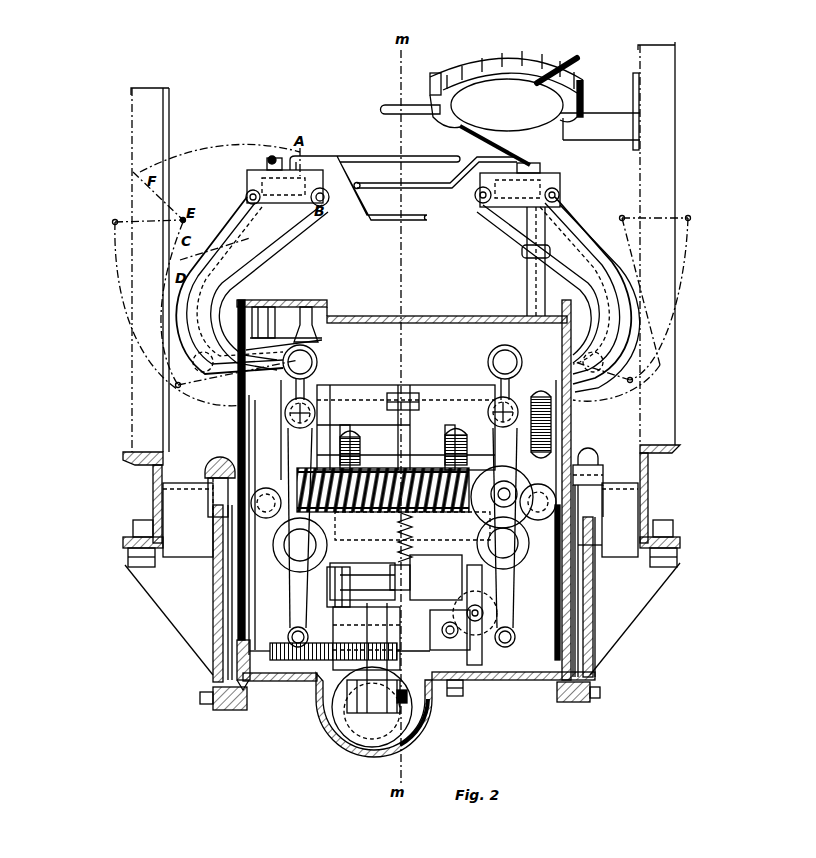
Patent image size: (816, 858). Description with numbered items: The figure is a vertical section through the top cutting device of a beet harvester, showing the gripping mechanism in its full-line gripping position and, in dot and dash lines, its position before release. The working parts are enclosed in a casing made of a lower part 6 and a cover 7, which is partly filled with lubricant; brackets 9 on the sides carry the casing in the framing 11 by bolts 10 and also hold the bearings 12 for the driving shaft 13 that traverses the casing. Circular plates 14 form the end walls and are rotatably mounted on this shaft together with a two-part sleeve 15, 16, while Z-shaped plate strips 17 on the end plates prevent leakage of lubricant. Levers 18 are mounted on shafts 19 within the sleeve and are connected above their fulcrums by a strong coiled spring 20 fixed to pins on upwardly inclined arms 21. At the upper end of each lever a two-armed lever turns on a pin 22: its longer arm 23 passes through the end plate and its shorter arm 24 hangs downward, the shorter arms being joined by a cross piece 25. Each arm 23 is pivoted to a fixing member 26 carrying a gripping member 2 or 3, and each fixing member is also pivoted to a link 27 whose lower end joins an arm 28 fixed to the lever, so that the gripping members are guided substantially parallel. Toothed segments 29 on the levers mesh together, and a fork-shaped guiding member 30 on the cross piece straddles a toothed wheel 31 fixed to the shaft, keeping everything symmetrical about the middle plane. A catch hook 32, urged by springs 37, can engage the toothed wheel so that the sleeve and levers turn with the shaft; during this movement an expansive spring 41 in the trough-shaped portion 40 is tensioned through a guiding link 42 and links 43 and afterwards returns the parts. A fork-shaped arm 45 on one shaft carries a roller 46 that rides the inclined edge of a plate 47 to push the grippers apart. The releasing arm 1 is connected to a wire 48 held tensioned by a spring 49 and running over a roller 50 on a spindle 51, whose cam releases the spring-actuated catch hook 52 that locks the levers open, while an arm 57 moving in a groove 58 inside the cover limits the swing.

The releasing arm 1 is at (415, 114).
The gripping member 2 is at (375, 156).
The gripping member 3 is at (415, 186).
The lower part of casing 6 is at (213, 640).
The cover 7 is at (430, 316).
The bracket 9 is at (160, 600).
The bolt 10 is at (140, 520).
The framing 11 is at (153, 480).
The bearing 12 is at (208, 466).
The driving shaft 13 is at (400, 520).
The circular plate 14 is at (238, 424).
The sleeve part 15 is at (256, 470).
The sleeve part 16 is at (571, 444).
The plate strip 17 is at (245, 441).
The lever 18 is at (290, 440).
The shaft 19 is at (285, 560).
The coiled spring 20 is at (338, 450).
The upwardly inclined arm 21 is at (283, 545).
The pin 22 is at (312, 352).
The arm 23 is at (252, 262).
The shorter arm 24 is at (312, 400).
The cross piece 25 is at (380, 385).
The fixing member 26 is at (297, 215).
The link 27 is at (578, 215).
The arm 28 is at (527, 300).
The toothed segment 29 is at (370, 540).
The fork-shaped guiding member 30 is at (346, 425).
The toothed wheel 31 is at (418, 395).
The catch hook 32 is at (405, 385).
The spring 37 is at (345, 423).
The trough-shaped portion 40 is at (345, 745).
The expansive spring 41 is at (335, 715).
The guiding link 42 is at (347, 692).
The link 43 is at (350, 708).
The fork-shaped arm 45 is at (596, 542).
The roller 46 is at (592, 462).
The plate 47 is at (505, 625).
The wire 48 is at (522, 163).
The spring 49 is at (278, 662).
The roller 50 is at (455, 697).
The spindle 51 is at (470, 645).
The catch hook 52 is at (290, 617).
The arm 57 is at (310, 305).
The groove 58 is at (283, 292).